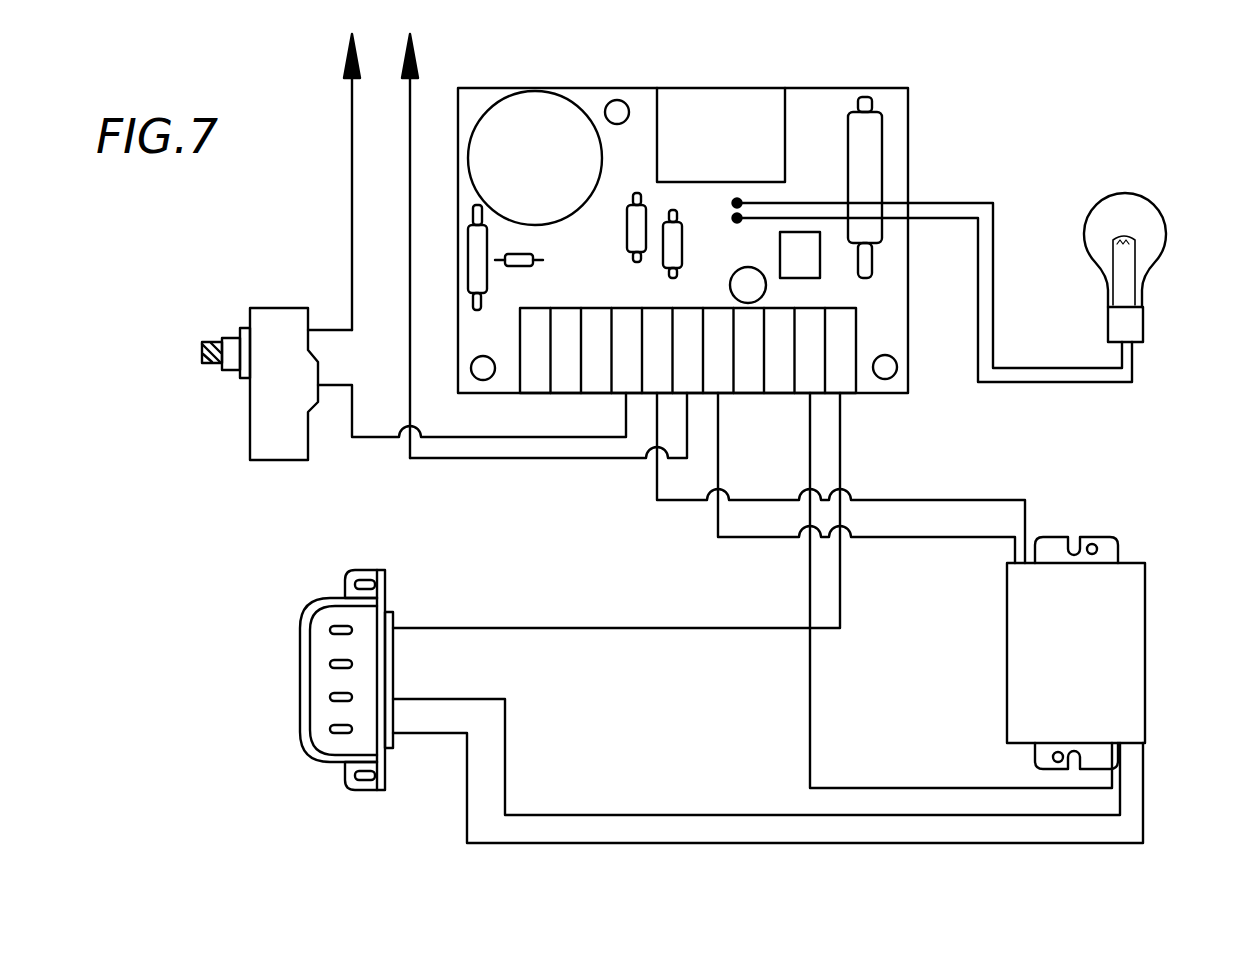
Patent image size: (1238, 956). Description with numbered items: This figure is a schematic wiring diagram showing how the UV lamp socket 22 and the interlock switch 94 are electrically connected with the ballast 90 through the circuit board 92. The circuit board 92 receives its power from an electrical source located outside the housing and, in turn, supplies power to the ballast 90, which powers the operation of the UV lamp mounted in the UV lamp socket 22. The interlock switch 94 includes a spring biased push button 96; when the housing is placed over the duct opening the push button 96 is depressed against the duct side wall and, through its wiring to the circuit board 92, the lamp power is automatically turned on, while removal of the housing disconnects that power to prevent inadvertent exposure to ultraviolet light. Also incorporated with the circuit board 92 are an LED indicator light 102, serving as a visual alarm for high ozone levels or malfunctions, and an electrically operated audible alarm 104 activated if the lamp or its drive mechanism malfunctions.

The UV lamp socket 22 is at (315, 600).
The ballast 90 is at (1132, 622).
The circuit board 92 is at (724, 217).
The interlock switch 94 is at (232, 338).
The spring biased push button 96 is at (207, 364).
The LED indicator light 102 is at (1138, 190).
The audible alarm 104 is at (540, 108).